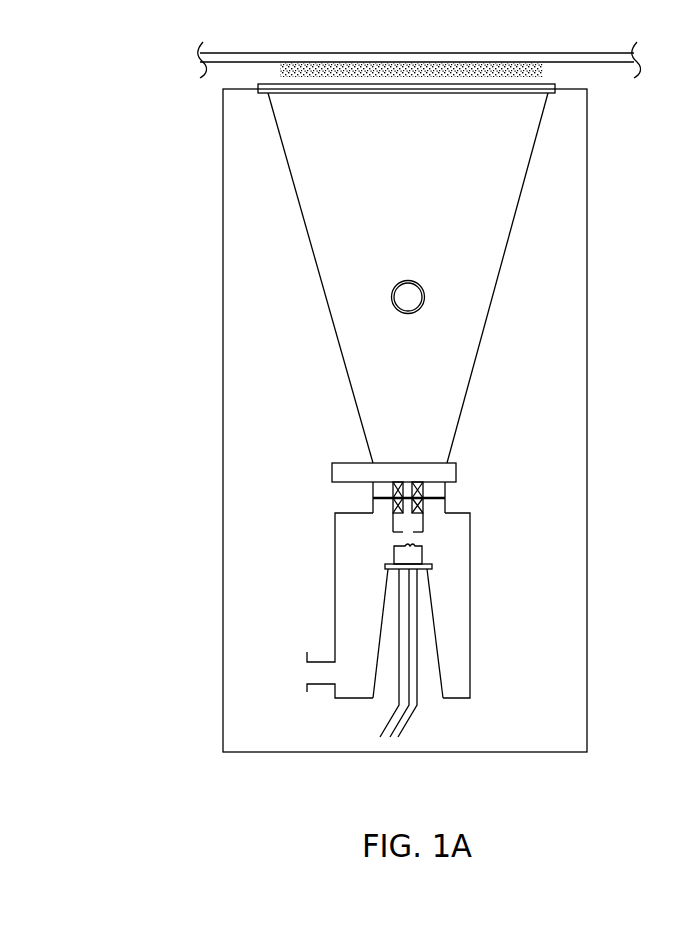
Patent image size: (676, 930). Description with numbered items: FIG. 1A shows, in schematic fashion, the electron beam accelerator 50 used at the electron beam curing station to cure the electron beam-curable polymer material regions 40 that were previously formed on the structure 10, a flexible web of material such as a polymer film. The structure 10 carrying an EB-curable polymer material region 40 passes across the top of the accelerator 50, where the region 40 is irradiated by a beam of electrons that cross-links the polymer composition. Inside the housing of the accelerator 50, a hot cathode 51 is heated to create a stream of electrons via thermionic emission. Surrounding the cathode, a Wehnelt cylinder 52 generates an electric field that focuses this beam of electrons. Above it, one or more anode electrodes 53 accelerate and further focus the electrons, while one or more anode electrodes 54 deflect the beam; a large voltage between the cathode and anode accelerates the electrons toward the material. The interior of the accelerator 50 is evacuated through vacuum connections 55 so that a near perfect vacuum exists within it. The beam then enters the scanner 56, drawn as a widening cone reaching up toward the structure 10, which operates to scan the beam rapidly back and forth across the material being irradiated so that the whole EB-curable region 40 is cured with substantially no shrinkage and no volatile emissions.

The structure 10 is at (258, 57).
The EB-curable polymer material region 40 is at (447, 68).
The electron beam accelerator 50 is at (208, 350).
The hot cathode 51 is at (416, 552).
The Wehnelt cylinder 52 is at (394, 551).
The anode electrodes 53 is at (423, 500).
The anode electrodes 54 is at (393, 491).
The vacuum connections 55 is at (400, 295).
The scanner 56 is at (470, 358).